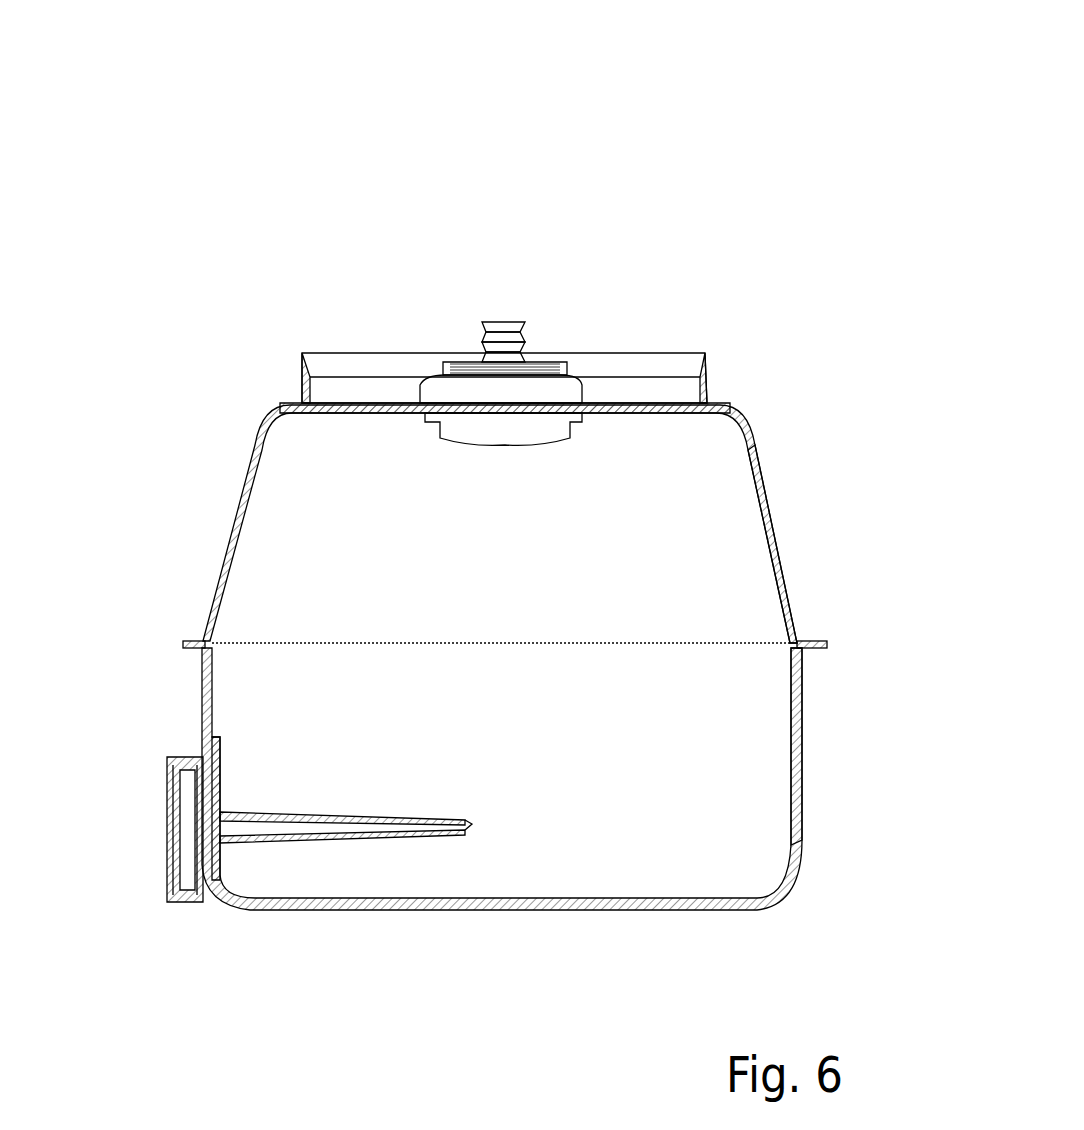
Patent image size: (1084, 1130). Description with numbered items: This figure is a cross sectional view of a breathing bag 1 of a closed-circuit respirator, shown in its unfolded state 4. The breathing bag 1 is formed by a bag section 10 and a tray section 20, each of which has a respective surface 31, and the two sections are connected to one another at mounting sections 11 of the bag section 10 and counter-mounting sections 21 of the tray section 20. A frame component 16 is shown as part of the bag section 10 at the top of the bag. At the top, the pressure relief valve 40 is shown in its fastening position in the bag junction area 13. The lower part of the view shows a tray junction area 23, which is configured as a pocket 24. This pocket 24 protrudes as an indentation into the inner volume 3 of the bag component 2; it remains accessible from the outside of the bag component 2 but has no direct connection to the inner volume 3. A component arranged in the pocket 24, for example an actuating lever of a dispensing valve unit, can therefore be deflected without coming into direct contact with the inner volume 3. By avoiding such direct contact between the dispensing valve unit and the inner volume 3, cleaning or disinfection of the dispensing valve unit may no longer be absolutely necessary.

The breathing bag 1 is at (503, 463).
The unfolded state 4 is at (741, 125).
The bag component 2 is at (440, 656).
The bag section 10 is at (247, 512).
The tray section 20 is at (230, 677).
The mounting sections 11 is at (503, 642).
The counter-mounting sections 21 is at (205, 643).
The inner volume 3 is at (520, 553).
The bag junction area 13 is at (578, 402).
The frame component 16 is at (703, 362).
The tray junction area 23 is at (210, 828).
The pocket 24 is at (343, 825).
The surface 31 is at (755, 480).
The pressure relief valve 40 is at (497, 340).